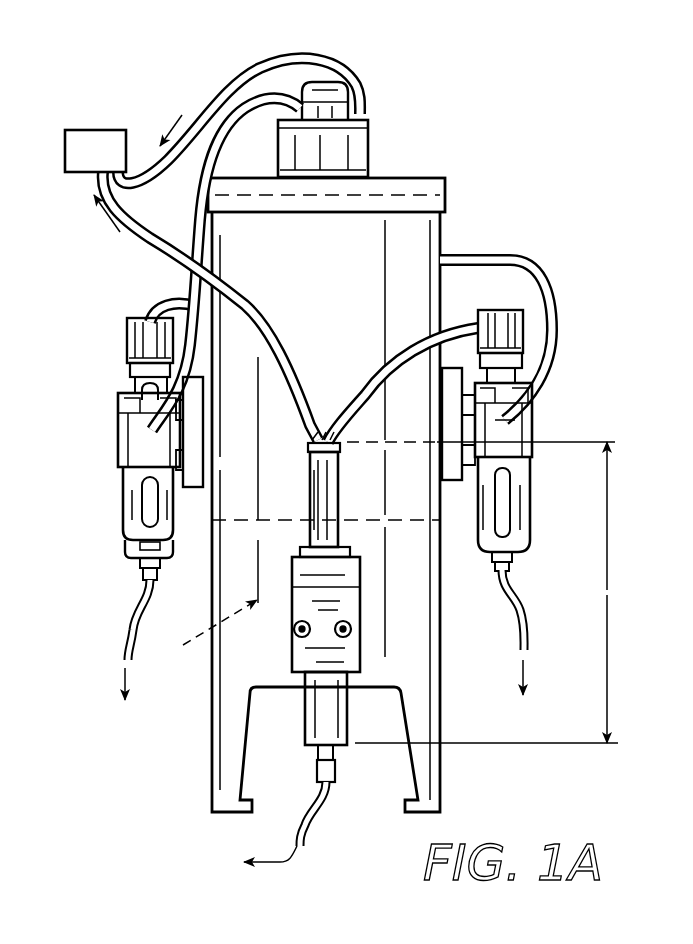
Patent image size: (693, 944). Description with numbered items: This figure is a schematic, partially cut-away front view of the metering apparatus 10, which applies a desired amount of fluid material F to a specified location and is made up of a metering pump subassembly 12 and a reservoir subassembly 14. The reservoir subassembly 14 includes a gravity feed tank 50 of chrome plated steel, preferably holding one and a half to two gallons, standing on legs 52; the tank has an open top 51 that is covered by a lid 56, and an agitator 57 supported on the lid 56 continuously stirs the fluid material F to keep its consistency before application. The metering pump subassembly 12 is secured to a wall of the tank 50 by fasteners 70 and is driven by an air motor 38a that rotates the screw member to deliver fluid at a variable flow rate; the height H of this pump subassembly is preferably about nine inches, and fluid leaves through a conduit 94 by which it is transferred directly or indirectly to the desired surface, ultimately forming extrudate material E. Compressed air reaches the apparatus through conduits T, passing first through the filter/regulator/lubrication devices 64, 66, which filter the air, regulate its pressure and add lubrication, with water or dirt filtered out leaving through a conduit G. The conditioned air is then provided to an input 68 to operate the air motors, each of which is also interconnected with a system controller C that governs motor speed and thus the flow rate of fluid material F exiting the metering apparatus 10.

The metering apparatus 10 is at (480, 78).
The metering pump subassembly 12 is at (380, 640).
The reservoir subassembly 14 is at (478, 197).
The tank 50 is at (395, 257).
The open top 51 is at (403, 195).
The legs 52 is at (227, 797).
The lid 56 is at (398, 176).
The agitator 57 is at (368, 71).
The filter/regulator/lubrication device 64 is at (547, 418).
The filter/regulator/lubrication device 66 is at (114, 420).
The input 68 is at (322, 432).
The fasteners 70 is at (340, 638).
The air motor 38a is at (330, 502).
The conduit 94 is at (317, 822).
The system controller C is at (191, 285).
The conduit T is at (157, 303).
The conduit G is at (133, 624).
The fluid material F is at (208, 629).
The height of the metering pump subassembly H is at (618, 580).
The extrudate material E is at (257, 861).